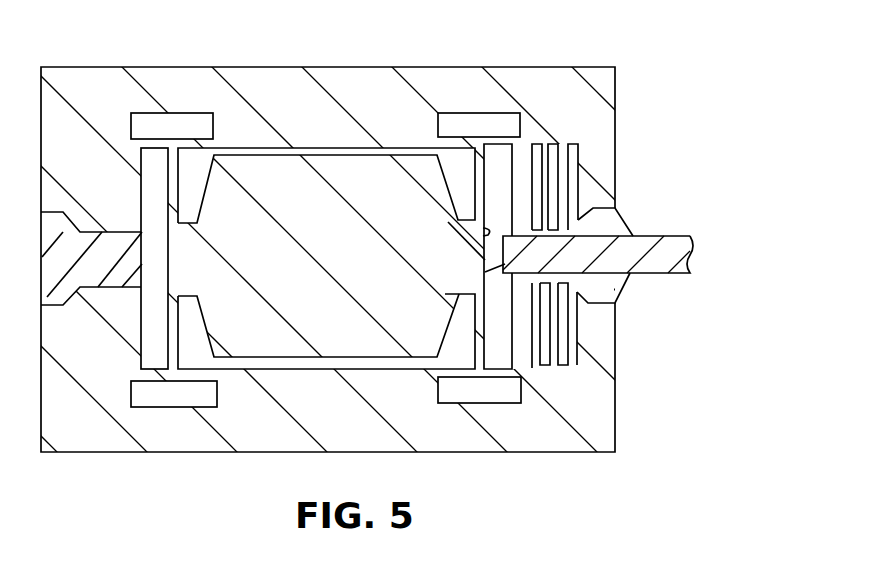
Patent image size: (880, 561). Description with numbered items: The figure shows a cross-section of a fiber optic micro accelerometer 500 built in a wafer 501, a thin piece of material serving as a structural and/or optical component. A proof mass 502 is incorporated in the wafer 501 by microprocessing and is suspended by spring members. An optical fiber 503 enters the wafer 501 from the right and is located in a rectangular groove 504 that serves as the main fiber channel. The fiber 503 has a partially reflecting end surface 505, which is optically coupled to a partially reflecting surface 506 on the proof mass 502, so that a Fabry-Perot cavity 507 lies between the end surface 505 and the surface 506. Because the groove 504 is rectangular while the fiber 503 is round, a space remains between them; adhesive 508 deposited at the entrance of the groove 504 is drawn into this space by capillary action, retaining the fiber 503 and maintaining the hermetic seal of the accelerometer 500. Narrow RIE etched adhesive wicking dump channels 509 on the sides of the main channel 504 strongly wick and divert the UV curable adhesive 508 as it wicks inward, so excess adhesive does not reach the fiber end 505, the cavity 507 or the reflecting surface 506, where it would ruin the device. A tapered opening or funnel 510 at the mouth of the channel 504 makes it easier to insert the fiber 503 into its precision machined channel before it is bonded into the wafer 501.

The accelerometer 500 is at (140, 40).
The wafer 501 is at (352, 421).
The proof mass 502 is at (327, 302).
The optical fiber 503 is at (619, 229).
The groove 504 is at (523, 232).
The partially reflecting end surface 505 is at (444, 283).
The partially reflecting surface 506 is at (483, 228).
The Fabry-Perot cavity 507 is at (503, 261).
The adhesive 508 is at (654, 194).
The adhesive wicking dump channels 509 is at (541, 366).
The tapered opening or funnel 510 is at (588, 303).